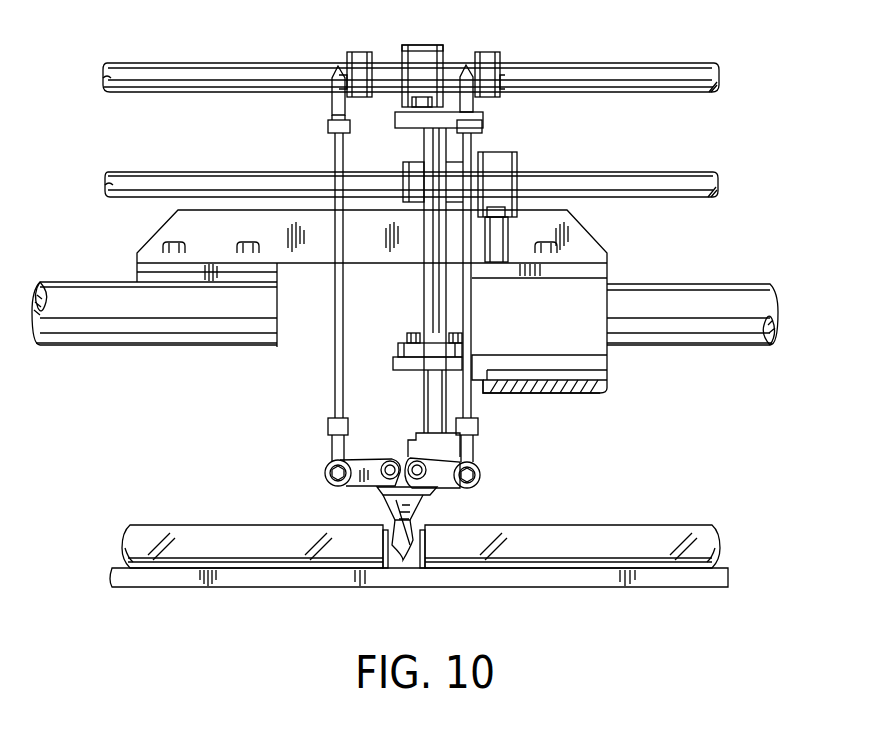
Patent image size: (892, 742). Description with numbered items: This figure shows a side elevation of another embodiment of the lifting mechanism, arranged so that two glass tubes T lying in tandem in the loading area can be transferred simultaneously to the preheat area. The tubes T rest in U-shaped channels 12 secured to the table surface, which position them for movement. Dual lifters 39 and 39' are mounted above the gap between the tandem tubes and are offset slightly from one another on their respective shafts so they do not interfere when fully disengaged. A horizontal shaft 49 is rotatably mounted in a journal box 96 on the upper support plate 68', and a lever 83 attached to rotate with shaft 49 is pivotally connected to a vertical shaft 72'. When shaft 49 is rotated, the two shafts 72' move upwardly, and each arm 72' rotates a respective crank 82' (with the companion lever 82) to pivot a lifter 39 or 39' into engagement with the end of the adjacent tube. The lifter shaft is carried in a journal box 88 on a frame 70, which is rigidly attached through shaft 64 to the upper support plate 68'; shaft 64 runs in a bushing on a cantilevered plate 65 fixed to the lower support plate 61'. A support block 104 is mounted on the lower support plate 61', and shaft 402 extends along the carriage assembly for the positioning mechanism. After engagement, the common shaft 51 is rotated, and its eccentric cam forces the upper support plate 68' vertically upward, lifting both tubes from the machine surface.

The horizontal shaft 49 is at (198, 63).
The shaft 51 is at (677, 178).
The lever 83 is at (360, 58).
The journal box 96 is at (438, 47).
The upper support plate 68' is at (440, 187).
The support block 104 is at (607, 283).
The lower support plate 61' is at (545, 409).
The shaft 402 is at (117, 335).
The shaft 72' is at (409, 263).
The shaft 64 is at (429, 305).
The cantilevered plate 65 is at (395, 363).
The frame 70 is at (422, 370).
The journal box 88 is at (410, 450).
The lever 82 is at (344, 463).
The crank 82' is at (468, 466).
The lifter 39 is at (386, 523).
The lifter 39' is at (445, 519).
The glass tube T is at (168, 530).
The U-shaped channel 12 is at (227, 580).